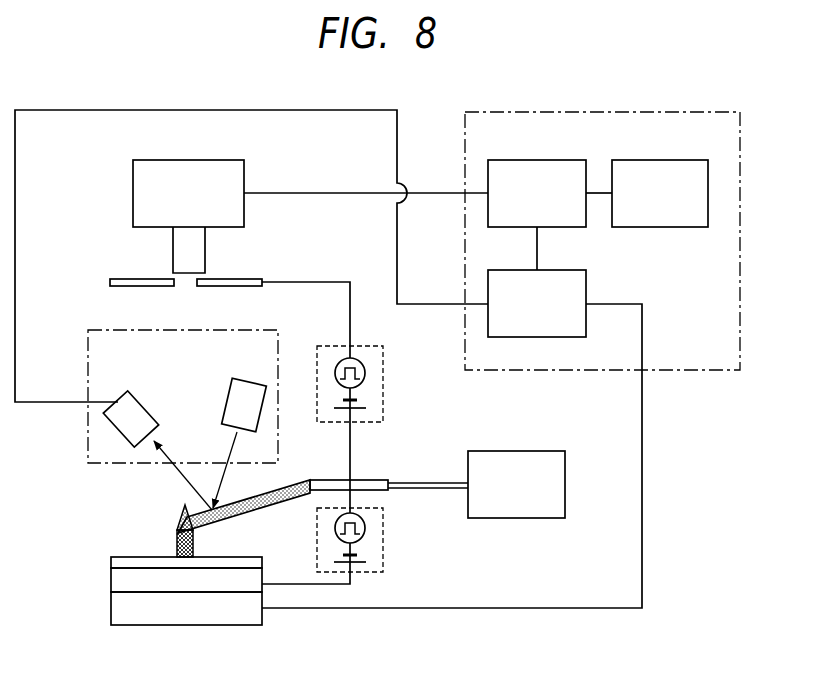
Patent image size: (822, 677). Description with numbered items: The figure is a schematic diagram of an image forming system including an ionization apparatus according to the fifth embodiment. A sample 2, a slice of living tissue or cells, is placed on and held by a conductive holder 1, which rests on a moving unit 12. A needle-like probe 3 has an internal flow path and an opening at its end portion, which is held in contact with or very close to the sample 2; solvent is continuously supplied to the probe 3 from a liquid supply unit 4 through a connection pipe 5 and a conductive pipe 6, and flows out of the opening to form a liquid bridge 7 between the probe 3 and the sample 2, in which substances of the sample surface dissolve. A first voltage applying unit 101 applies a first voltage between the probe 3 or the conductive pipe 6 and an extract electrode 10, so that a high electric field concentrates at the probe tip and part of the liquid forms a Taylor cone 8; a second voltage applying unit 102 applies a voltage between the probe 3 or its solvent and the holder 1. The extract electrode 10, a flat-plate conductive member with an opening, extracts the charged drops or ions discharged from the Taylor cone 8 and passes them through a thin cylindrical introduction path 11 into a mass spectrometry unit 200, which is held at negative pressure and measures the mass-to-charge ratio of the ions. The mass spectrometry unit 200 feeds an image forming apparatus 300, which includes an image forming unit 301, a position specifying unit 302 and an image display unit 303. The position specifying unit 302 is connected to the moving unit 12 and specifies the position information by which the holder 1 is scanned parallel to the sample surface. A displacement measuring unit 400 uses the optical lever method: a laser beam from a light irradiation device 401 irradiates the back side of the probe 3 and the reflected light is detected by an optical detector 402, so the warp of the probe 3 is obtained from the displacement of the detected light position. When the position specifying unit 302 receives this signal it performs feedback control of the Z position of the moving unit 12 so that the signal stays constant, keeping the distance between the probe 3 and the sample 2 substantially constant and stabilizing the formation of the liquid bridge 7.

The holder 1 is at (110, 580).
The sample 2 is at (110, 564).
The moving unit 12 is at (110, 607).
The probe 3 is at (300, 480).
The liquid supply unit 4 is at (518, 460).
The connection pipe 5 is at (431, 480).
The conductive pipe 6 is at (370, 478).
The liquid bridge 7 is at (176, 543).
The Taylor cone 8 is at (176, 518).
The extract electrode 10 is at (126, 287).
The introduction path 11 is at (173, 251).
The first voltage applying unit 101 is at (385, 377).
The second voltage applying unit 102 is at (385, 540).
The mass spectrometry unit 200 is at (189, 168).
The image forming apparatus 300 is at (685, 107).
The image forming unit 301 is at (536, 170).
The position specifying unit 302 is at (578, 293).
The image display unit 303 is at (659, 170).
The displacement measuring unit 400 is at (218, 326).
The light irradiation device 401 is at (248, 388).
The optical detector 402 is at (140, 412).